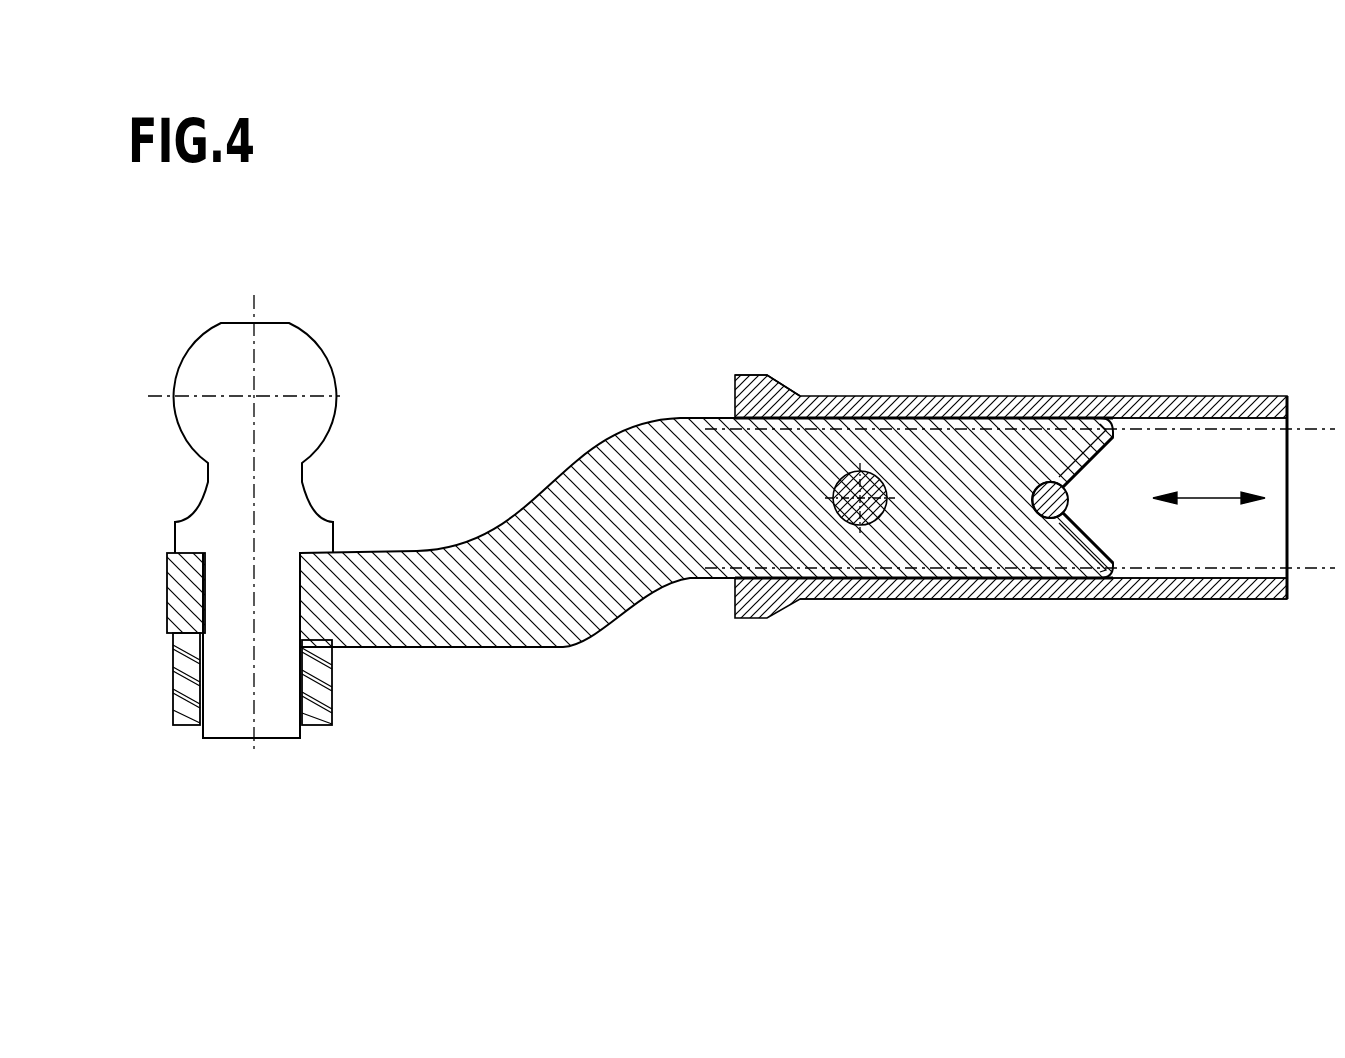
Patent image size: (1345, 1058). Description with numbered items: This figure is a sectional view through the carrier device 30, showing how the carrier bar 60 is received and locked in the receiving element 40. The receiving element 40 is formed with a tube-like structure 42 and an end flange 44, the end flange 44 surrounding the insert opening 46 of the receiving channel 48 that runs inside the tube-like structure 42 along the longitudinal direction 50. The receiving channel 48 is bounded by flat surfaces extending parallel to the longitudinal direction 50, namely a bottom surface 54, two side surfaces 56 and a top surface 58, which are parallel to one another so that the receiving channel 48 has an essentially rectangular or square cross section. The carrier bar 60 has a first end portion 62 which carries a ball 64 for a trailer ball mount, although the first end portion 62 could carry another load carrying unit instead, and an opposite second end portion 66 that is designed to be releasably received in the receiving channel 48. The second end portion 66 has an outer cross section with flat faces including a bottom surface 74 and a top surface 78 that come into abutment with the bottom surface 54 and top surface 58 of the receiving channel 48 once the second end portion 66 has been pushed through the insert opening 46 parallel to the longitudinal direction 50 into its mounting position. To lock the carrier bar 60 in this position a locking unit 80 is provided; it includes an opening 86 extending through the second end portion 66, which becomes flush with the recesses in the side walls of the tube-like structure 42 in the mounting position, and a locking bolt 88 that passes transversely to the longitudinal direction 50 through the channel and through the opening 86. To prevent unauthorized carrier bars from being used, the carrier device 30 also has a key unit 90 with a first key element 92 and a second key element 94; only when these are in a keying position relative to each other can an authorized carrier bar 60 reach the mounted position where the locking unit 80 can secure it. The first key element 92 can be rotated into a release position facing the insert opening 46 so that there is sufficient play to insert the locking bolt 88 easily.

The carrier device 30 is at (710, 312).
The receiving element 40 is at (930, 382).
The tube-like structure 42 is at (1028, 600).
The end flange 44 is at (747, 377).
The insert opening 46 is at (710, 430).
The receiving channel 48 is at (1138, 480).
The longitudinal direction 50 is at (1212, 498).
The bottom surface 54 is at (1177, 580).
The side surfaces 56 is at (1235, 460).
The top surface 58 is at (1085, 470).
The carrier bar 60 is at (550, 597).
The first end portion 62 is at (325, 605).
The ball 64 is at (295, 360).
The second end portion 66 is at (983, 525).
The bottom surface 74 is at (900, 601).
The top surface 78 is at (880, 479).
The locking unit 80 is at (873, 447).
The opening 86 is at (820, 567).
The locking bolt 88 is at (813, 597).
The key unit 90 is at (1085, 513).
The first key element 92 is at (1058, 530).
The second key element 94 is at (1102, 422).